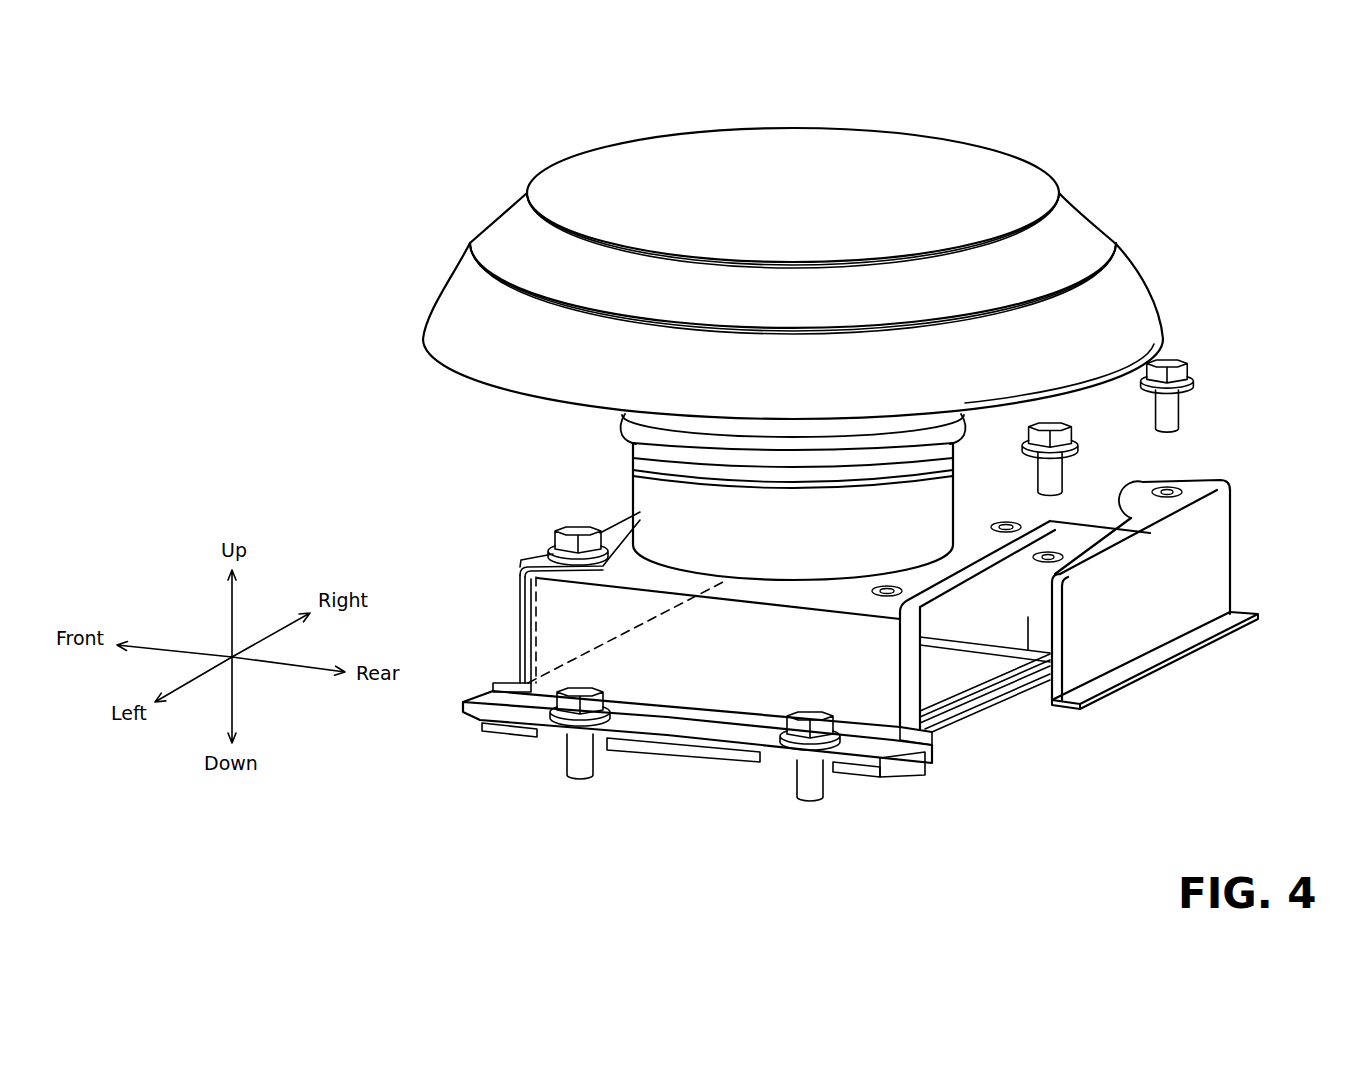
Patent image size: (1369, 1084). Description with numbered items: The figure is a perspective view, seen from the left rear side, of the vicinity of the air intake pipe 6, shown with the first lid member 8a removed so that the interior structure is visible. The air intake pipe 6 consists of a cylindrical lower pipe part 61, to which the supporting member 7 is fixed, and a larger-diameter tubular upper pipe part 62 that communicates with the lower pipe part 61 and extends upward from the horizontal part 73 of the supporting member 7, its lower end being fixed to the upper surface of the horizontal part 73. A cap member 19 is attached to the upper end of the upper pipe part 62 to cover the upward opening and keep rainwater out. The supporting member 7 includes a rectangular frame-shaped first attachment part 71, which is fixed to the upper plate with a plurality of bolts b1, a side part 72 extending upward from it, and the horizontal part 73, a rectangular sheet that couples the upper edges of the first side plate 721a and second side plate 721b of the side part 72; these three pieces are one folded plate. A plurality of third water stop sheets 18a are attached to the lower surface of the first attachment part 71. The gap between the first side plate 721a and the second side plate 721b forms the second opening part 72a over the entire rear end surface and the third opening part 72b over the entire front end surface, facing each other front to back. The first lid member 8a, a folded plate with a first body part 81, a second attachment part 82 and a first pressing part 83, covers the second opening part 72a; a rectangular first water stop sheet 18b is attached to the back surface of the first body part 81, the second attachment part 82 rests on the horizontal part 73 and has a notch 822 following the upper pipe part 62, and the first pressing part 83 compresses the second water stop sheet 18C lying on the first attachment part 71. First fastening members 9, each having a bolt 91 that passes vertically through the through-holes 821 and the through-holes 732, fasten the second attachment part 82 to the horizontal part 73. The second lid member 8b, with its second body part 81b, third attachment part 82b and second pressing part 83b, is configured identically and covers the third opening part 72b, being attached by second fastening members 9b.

The cap member 19 is at (1014, 150).
The air intake pipe 6 is at (899, 502).
The lower pipe part 61 is at (910, 668).
The upper pipe part 62 is at (933, 488).
The supporting member 7 is at (809, 558).
The first attachment part 71 is at (707, 728).
The side part 72 is at (673, 651).
The second opening part 72a is at (902, 688).
The third opening part 72b is at (538, 648).
The first side plate 721a is at (670, 680).
The second side plate 721b is at (1050, 706).
The horizontal part 73 is at (1157, 352).
The through-holes 732 is at (1009, 522).
The first lid member 8a is at (1189, 575).
The second lid member 8b is at (530, 550).
The first body part 81 is at (1207, 589).
The second attachment part 82 is at (1229, 483).
The through-holes 821 is at (1174, 487).
The notch 822 is at (1118, 521).
The first pressing part 83 is at (1175, 649).
The second body part 81b is at (520, 597).
The third attachment part 82b is at (620, 513).
The second pressing part 83b is at (493, 685).
The first fastening members 9 is at (1210, 368).
The second fastening members 9b is at (567, 509).
The bolt 91 is at (1183, 408).
The third water stop sheets 18a is at (878, 778).
The first water stop sheet 18b is at (1050, 590).
The second water stop sheet 18C is at (923, 765).
The bolts b1 is at (797, 778).